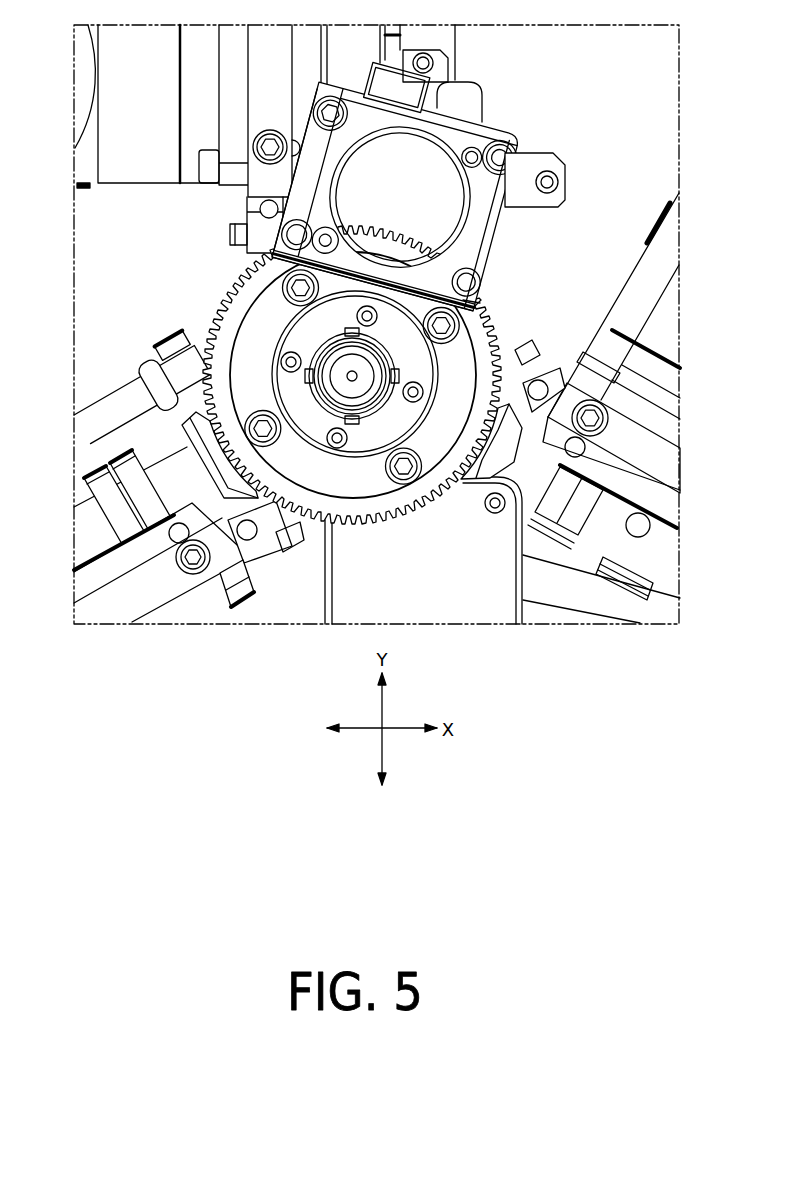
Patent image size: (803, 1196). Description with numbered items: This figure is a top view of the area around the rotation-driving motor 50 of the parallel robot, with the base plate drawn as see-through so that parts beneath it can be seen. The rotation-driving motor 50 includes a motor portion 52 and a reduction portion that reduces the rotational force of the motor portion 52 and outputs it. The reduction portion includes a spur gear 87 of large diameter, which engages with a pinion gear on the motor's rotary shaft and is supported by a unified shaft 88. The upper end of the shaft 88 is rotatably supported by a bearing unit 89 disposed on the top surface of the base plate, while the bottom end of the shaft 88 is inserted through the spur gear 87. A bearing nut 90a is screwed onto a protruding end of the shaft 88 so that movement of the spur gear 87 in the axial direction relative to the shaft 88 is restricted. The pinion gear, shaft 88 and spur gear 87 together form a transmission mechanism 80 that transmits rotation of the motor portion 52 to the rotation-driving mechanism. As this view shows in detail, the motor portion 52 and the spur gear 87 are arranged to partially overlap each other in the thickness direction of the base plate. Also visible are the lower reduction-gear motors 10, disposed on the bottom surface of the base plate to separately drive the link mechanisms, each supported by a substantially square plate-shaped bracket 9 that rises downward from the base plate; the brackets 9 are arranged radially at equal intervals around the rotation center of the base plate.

The bracket 9 is at (643, 437).
The lower reduction-gear motor 10 is at (634, 272).
The rotation-driving motor 50 is at (508, 120).
The motor portion 52 is at (269, 207).
The transmission mechanism 80 is at (505, 297).
The spur gear 87 is at (485, 322).
The shaft 88 is at (363, 385).
The bearing unit 89 is at (268, 342).
The bearing nut 90a is at (327, 412).